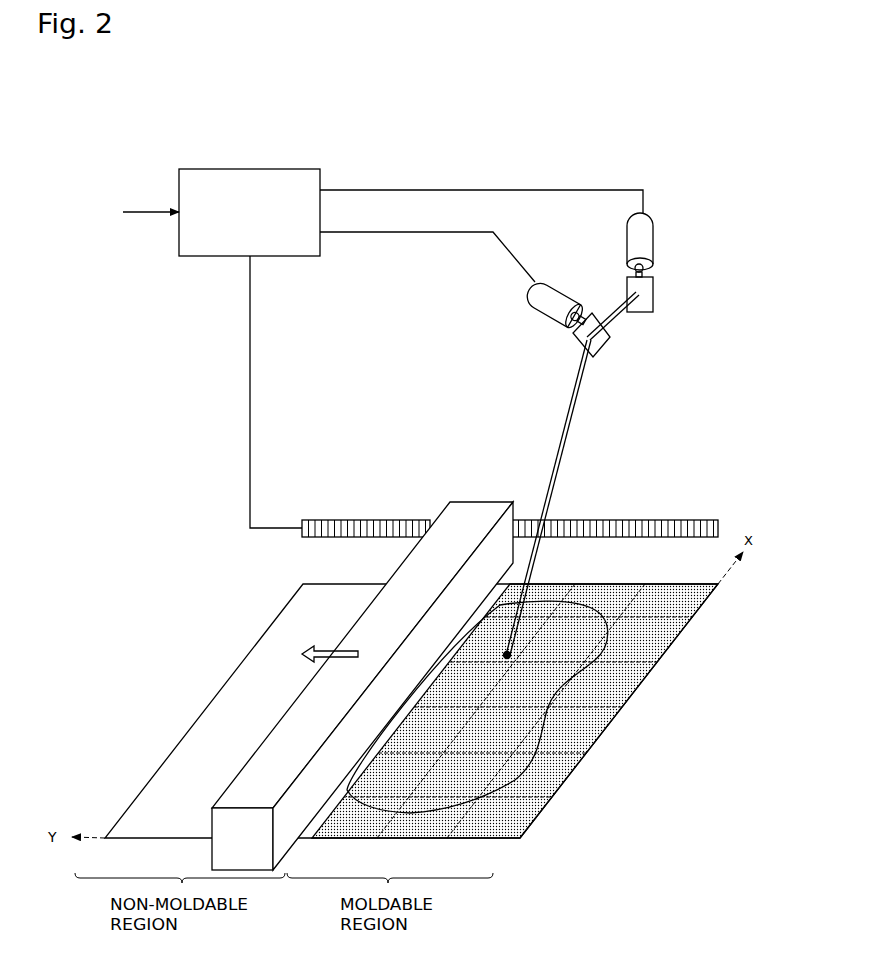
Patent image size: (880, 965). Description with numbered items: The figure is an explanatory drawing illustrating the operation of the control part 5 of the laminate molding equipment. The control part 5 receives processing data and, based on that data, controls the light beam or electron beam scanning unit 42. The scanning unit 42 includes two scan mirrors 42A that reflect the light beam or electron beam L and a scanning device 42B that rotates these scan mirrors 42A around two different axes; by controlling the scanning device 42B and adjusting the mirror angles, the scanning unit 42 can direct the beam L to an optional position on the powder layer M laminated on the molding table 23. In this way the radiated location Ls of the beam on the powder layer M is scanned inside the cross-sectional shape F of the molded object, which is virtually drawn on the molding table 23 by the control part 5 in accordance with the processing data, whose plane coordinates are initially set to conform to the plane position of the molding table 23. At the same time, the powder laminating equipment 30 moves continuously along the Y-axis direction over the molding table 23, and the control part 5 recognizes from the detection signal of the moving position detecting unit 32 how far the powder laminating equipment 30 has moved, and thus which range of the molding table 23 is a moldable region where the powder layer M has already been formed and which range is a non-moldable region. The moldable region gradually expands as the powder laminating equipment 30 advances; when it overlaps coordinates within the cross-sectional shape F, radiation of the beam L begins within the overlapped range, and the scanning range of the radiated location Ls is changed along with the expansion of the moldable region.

The control part 5 is at (278, 168).
The light beam or electron beam scanning unit 42 is at (584, 222).
The scan mirror 42A is at (590, 313).
The scanning device 42B is at (553, 282).
The light beam or electron beam L is at (570, 412).
The moving position detecting unit 32 is at (657, 518).
The powder laminating equipment 30 is at (455, 523).
The molding table 23 is at (412, 711).
The powder layer M is at (592, 727).
The cross-sectional shape F is at (530, 768).
The radiated location Ls is at (510, 655).